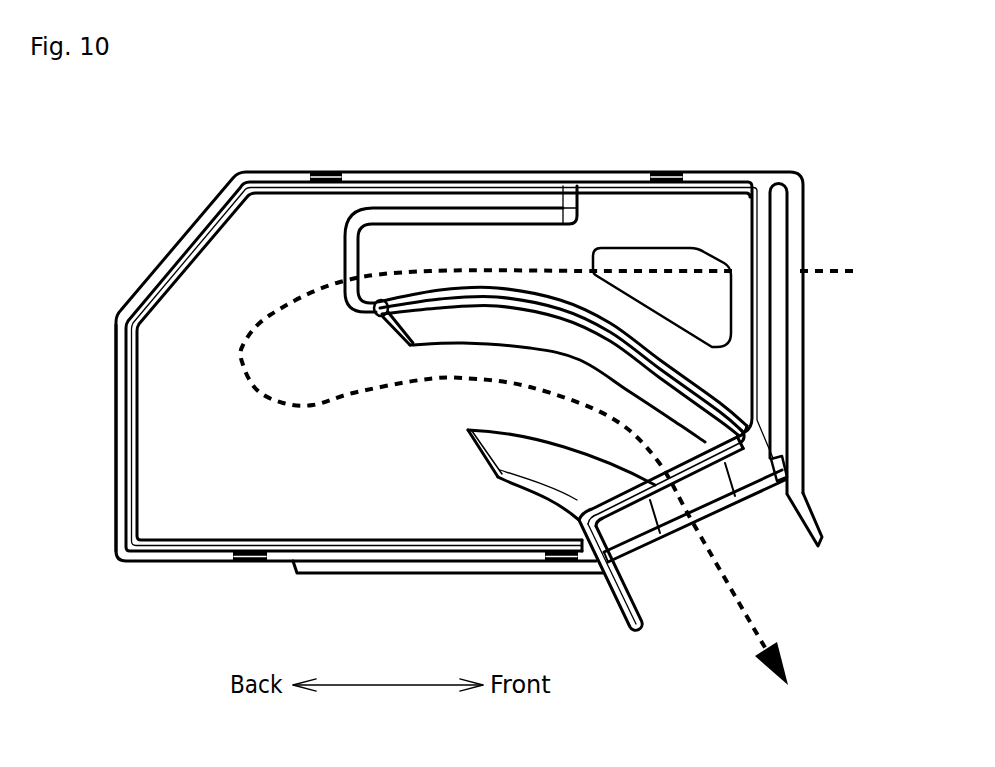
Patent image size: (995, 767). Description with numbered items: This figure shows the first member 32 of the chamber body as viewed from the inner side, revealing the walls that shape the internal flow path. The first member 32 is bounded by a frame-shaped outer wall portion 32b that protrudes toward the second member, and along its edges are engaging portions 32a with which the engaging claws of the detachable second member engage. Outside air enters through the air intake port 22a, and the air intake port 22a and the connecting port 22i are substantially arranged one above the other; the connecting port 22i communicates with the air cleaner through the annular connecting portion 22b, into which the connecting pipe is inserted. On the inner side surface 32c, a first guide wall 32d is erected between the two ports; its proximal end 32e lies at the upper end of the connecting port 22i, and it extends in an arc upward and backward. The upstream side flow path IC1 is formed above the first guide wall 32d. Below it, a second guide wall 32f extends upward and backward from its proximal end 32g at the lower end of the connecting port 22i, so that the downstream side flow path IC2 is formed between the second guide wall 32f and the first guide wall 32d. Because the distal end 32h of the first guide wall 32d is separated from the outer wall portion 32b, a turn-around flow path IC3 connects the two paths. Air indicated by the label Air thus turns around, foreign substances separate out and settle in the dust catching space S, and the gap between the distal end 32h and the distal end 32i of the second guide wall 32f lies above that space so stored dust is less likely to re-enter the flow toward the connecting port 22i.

The first member 32 is at (168, 250).
The engaging portions 32a is at (322, 172).
The frame-shaped outer wall portion 32b is at (117, 315).
The inner side surface 32c is at (300, 243).
The first guide wall 32d is at (497, 302).
The proximal end of the first guide wall 32e is at (757, 422).
The second guide wall 32f is at (557, 493).
The proximal end of the second guide wall 32g is at (583, 525).
The distal end of the first guide wall 32h is at (385, 312).
The distal end of the second guide wall 32i is at (497, 474).
The air intake port 22a is at (659, 258).
The connecting portion 22b is at (741, 484).
The connecting port 22i is at (646, 492).
The upstream side flow path IC1 is at (489, 256).
The downstream side flow path IC2 is at (458, 414).
The turn-around flow path IC3 is at (222, 382).
The dust catching space S is at (332, 524).
The air flow Air is at (737, 587).